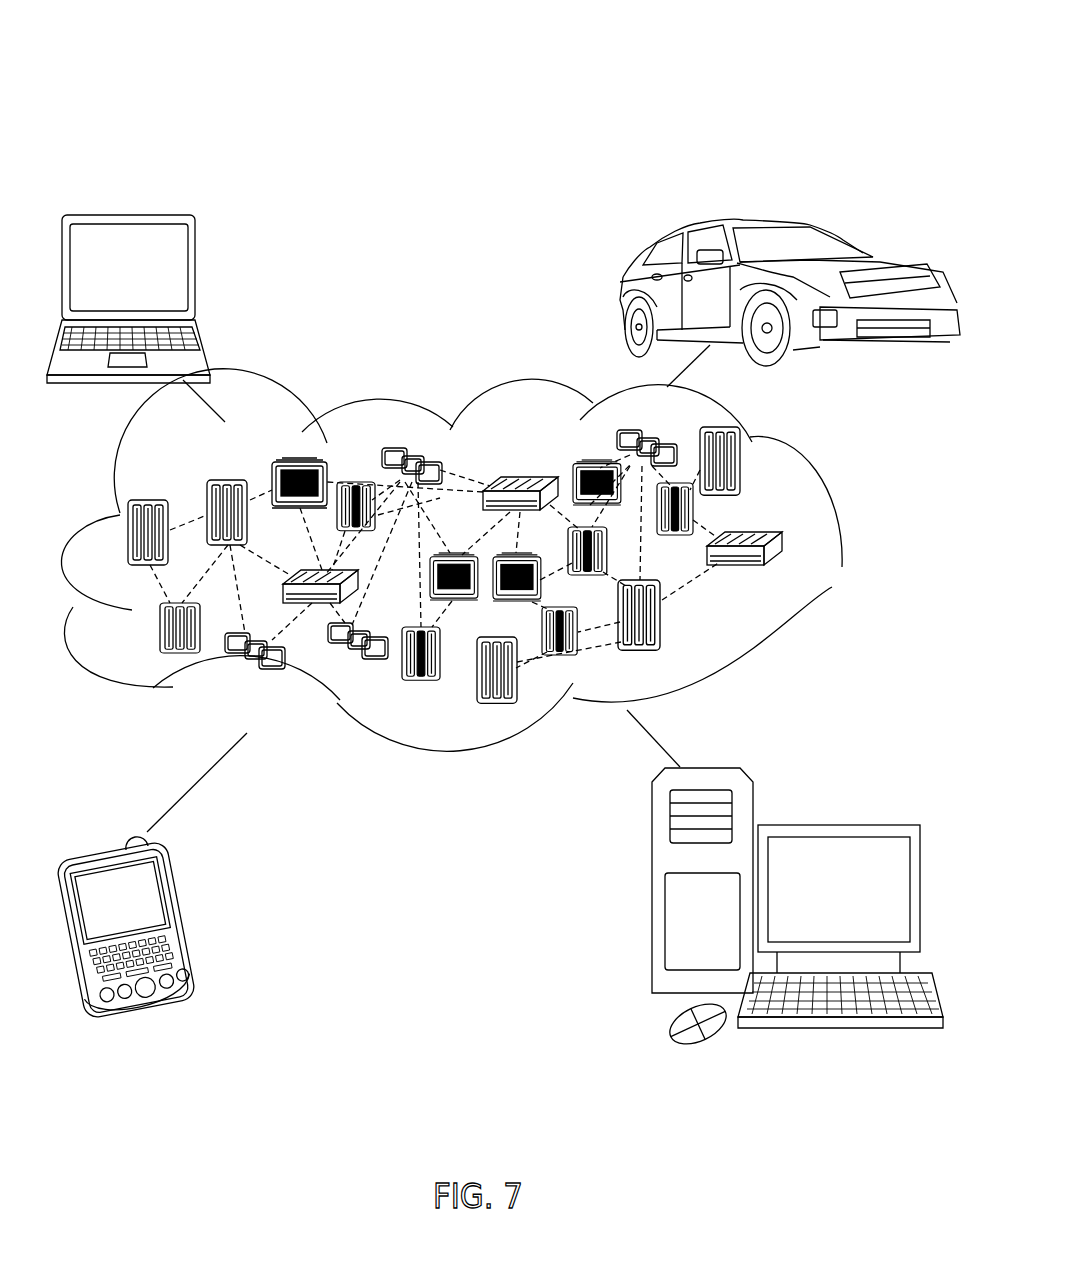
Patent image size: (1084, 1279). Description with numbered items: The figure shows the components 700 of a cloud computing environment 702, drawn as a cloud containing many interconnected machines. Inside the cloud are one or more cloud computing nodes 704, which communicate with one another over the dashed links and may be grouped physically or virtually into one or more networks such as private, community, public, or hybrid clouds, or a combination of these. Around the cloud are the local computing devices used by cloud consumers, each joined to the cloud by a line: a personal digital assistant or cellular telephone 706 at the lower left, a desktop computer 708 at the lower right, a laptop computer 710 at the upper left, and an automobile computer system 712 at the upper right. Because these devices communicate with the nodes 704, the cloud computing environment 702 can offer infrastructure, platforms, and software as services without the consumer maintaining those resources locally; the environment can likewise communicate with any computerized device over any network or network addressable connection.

The components 700 is at (722, 91).
The cloud computing environment 702 is at (837, 542).
The cloud computing nodes 704 is at (783, 575).
The personal digital assistant or cellular telephone 706 is at (183, 917).
The desktop computer 708 is at (847, 800).
The laptop computer 710 is at (197, 278).
The automobile computer system 712 is at (627, 297).